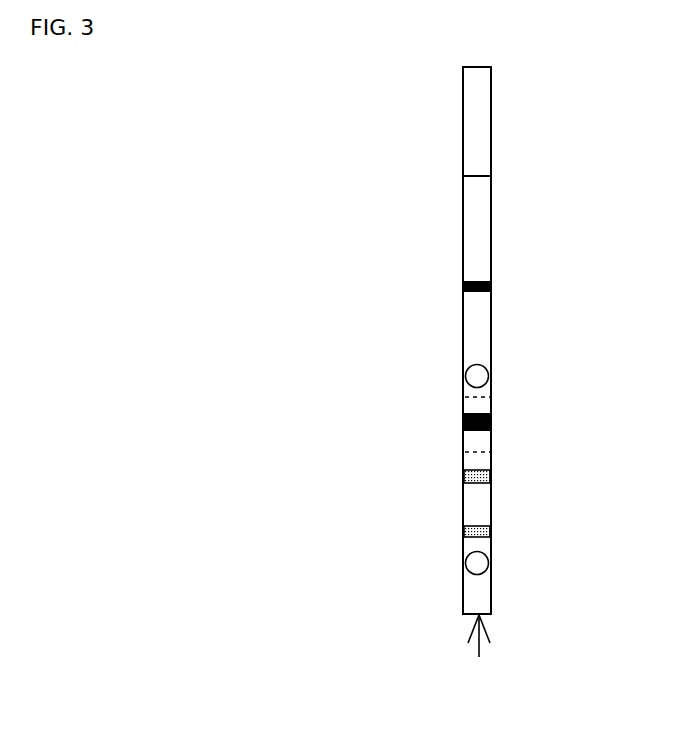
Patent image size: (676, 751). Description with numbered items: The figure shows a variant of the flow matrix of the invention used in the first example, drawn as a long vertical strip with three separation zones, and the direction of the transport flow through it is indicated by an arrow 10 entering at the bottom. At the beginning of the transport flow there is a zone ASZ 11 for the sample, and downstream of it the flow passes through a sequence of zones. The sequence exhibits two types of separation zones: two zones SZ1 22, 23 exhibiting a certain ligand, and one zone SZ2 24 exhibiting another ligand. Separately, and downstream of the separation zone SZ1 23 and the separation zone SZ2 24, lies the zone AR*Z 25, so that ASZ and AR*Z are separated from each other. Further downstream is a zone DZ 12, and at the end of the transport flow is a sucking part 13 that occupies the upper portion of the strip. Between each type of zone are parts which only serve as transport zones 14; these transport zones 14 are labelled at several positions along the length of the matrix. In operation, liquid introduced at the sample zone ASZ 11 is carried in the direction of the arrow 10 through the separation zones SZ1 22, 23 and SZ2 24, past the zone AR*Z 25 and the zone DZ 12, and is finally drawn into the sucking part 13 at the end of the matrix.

The arrow 10 is at (494, 638).
The zone ASZ 11 is at (497, 562).
The zone DZ 12 is at (491, 285).
The sucking part 13 is at (491, 154).
The transport zones 14 is at (462, 336).
The separation zone SZ1 22 is at (491, 532).
The separation zone SZ1 23 is at (491, 481).
The separation zone SZ2 24 is at (491, 423).
The zone AR*Z 25 is at (491, 376).